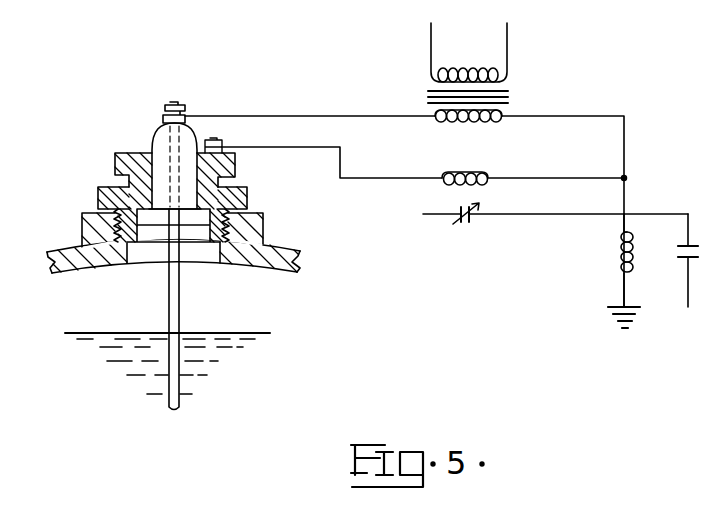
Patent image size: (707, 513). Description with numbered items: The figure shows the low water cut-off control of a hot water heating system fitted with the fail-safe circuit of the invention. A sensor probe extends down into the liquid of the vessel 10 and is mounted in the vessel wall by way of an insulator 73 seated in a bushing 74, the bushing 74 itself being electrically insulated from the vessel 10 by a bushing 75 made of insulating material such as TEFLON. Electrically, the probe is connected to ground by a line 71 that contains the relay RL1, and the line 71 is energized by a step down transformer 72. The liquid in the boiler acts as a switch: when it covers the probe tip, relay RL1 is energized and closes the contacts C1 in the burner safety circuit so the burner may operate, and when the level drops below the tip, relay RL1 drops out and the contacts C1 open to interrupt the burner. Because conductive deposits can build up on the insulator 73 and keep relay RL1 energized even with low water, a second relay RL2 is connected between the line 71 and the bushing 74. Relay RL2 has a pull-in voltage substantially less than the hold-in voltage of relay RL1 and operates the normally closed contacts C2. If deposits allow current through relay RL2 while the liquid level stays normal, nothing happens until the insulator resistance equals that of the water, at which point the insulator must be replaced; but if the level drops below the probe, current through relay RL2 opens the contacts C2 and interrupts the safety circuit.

The vessel 10 is at (70, 246).
The line 71 is at (572, 116).
The step down transformer 72 is at (485, 53).
The insulator 73 is at (153, 134).
The bushing 74 is at (115, 155).
The insulating bushing 75 is at (98, 190).
The relay RL1 is at (617, 253).
The second relay RL2 is at (533, 167).
The contacts C1 is at (673, 260).
The normally closed contacts C2 is at (555, 226).